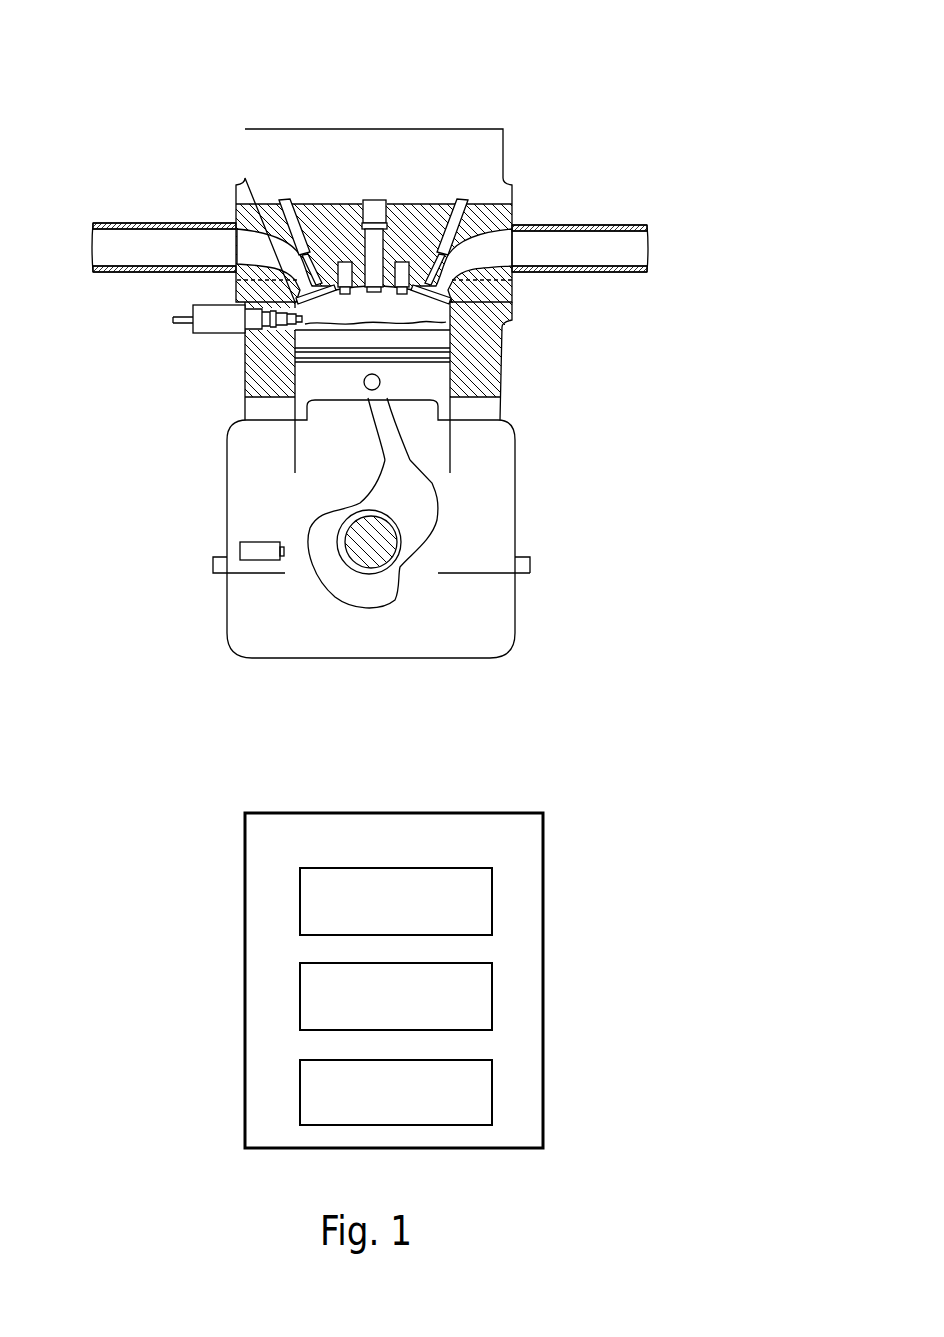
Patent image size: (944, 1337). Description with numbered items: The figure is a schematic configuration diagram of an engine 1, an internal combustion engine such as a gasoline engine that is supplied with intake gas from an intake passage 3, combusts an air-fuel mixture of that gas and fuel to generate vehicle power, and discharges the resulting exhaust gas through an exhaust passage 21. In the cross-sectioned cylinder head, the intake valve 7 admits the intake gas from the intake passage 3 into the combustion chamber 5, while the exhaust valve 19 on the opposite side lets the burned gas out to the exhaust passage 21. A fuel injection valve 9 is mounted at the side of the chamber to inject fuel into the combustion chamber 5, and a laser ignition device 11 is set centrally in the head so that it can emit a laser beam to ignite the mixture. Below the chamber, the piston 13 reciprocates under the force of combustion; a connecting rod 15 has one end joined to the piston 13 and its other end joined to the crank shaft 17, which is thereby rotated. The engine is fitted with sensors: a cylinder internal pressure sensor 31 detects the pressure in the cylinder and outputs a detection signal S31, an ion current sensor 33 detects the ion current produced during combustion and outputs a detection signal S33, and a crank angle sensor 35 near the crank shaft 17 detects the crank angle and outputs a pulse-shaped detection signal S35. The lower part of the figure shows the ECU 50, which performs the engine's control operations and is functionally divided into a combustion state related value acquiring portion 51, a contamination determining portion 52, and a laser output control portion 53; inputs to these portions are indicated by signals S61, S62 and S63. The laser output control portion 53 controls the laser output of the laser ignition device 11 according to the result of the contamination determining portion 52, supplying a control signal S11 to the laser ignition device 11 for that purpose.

The engine 1 is at (177, 146).
The intake passage 3 is at (120, 222).
The combustion chamber 5 is at (425, 318).
The intake valve 7 is at (283, 222).
The fuel injection valve 9 is at (213, 334).
The laser ignition device 11 is at (386, 212).
The piston 13 is at (452, 366).
The connecting rod 15 is at (402, 434).
The crank shaft 17 is at (382, 567).
The exhaust valve 19 is at (452, 268).
The exhaust passage 21 is at (632, 224).
The cylinder internal pressure sensor 31 is at (338, 292).
The ion current sensor 33 is at (410, 294).
The crank angle sensor 35 is at (258, 562).
The ECU 50 is at (400, 812).
The combustion state related value acquiring portion 51 is at (492, 893).
The contamination determining portion 52 is at (492, 980).
The laser output control portion 53 is at (492, 1075).
The control signal S11 is at (373, 199).
The detection signal S31 is at (344, 262).
The detection signal S33 is at (404, 262).
The detection signal S35 is at (238, 551).
The input signal S61 is at (243, 885).
The input signal S62 is at (243, 990).
The input signal S63 is at (243, 1083).